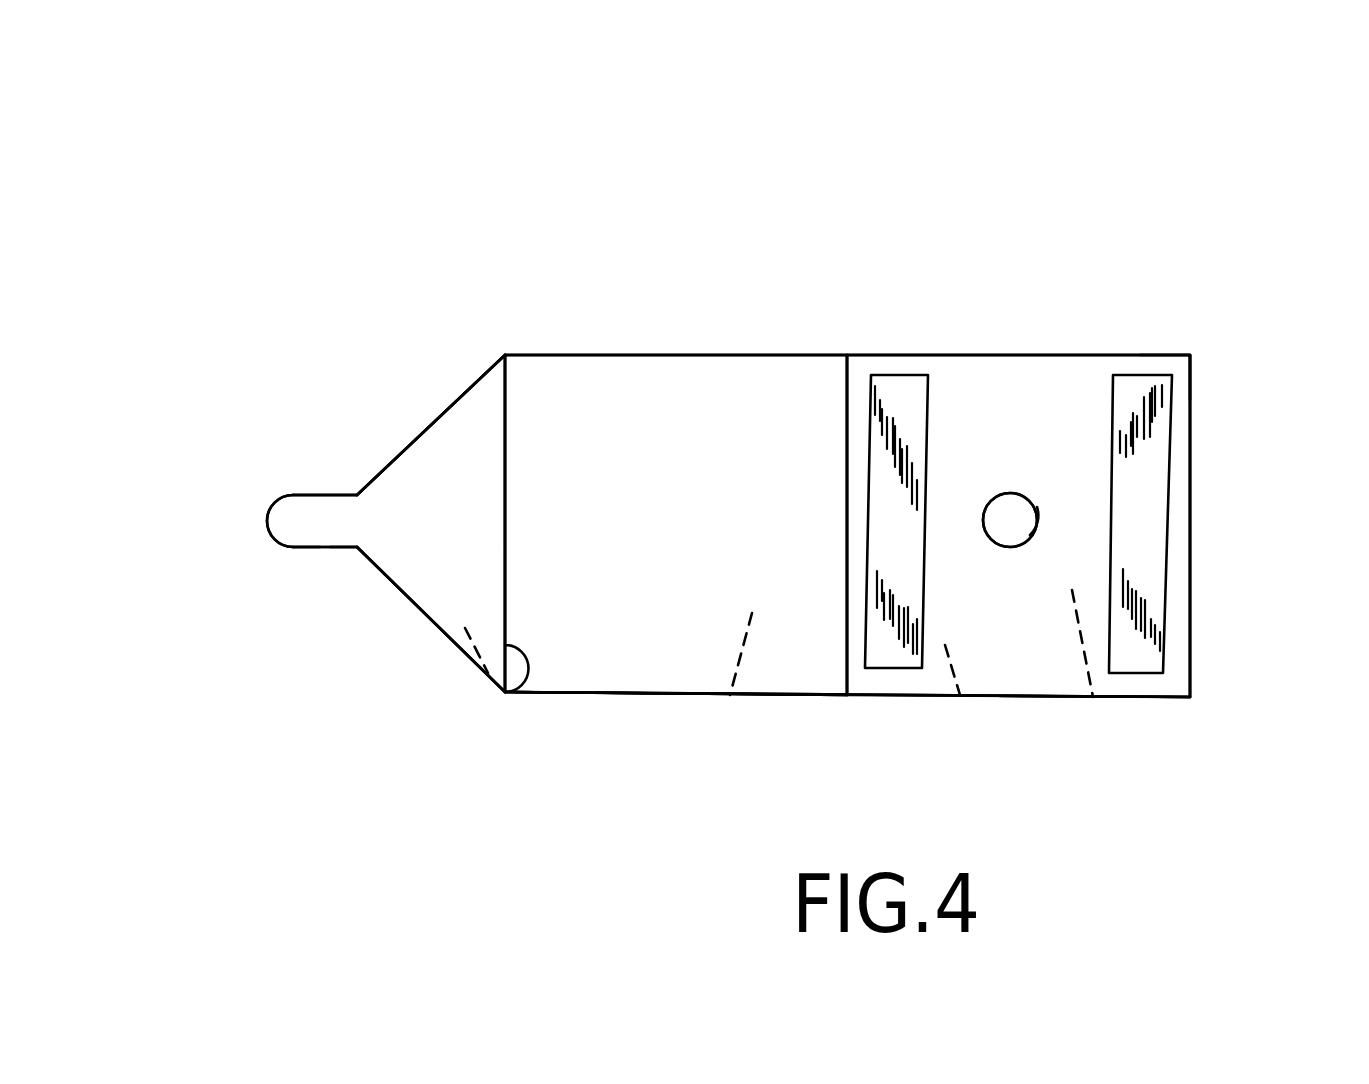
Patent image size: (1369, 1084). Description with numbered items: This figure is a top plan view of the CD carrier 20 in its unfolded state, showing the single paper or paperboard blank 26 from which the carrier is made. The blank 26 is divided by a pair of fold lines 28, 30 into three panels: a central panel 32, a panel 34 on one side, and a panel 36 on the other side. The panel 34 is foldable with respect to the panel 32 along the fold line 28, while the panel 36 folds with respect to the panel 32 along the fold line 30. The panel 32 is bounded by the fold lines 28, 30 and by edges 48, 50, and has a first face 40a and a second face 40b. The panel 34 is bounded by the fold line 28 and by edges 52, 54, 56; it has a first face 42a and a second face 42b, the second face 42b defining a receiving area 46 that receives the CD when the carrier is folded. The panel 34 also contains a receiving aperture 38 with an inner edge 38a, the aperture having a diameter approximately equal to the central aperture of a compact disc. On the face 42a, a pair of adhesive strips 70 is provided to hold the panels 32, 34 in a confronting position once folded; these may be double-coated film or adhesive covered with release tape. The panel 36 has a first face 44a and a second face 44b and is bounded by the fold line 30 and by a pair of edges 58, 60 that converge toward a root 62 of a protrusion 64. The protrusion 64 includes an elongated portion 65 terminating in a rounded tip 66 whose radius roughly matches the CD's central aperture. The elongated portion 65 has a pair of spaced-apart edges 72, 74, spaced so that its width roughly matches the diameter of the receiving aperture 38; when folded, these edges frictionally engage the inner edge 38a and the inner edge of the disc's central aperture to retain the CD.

The CD carrier 20 is at (880, 197).
The blank 26 is at (670, 702).
The fold line 28 is at (843, 610).
The fold line 30 is at (520, 697).
The panel 32 is at (690, 495).
The panel 34 is at (1035, 466).
The panel 36 is at (483, 525).
The receiving aperture 38 is at (1037, 507).
The inner edge 38a is at (1030, 535).
The first face 40a is at (680, 655).
The second face 40b is at (730, 695).
The first face 42a is at (1040, 629).
The second face 42b is at (960, 695).
The first face 44a is at (495, 595).
The second face 44b is at (485, 682).
The receiving area 46 is at (1093, 697).
The edge 48 is at (590, 697).
The edge 50 is at (642, 355).
The edge 52 is at (1048, 697).
The edge 54 is at (1190, 525).
The edge 56 is at (1140, 353).
The edge 58 is at (412, 603).
The edge 60 is at (452, 400).
The root 62 is at (352, 548).
The protrusion 64 is at (287, 545).
The elongated portion 65 is at (312, 515).
The rounded tip 66 is at (268, 507).
The adhesive strips 70 is at (927, 413).
The edge 72 is at (310, 548).
The edge 74 is at (333, 497).